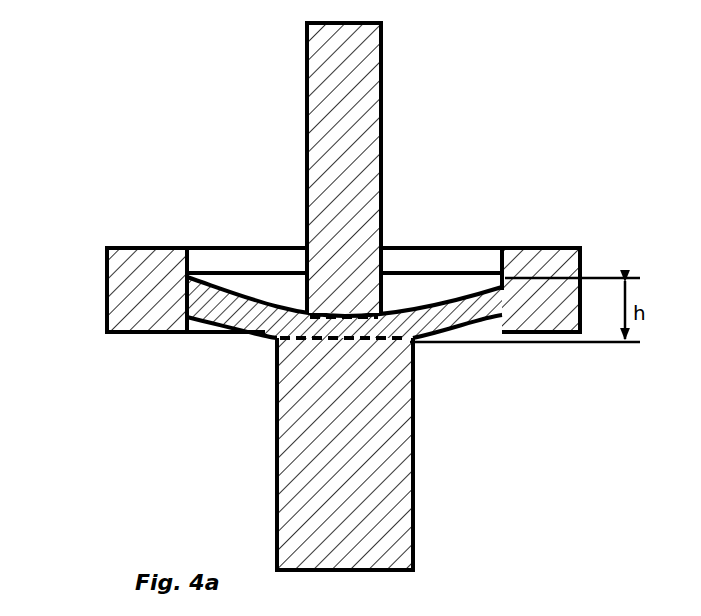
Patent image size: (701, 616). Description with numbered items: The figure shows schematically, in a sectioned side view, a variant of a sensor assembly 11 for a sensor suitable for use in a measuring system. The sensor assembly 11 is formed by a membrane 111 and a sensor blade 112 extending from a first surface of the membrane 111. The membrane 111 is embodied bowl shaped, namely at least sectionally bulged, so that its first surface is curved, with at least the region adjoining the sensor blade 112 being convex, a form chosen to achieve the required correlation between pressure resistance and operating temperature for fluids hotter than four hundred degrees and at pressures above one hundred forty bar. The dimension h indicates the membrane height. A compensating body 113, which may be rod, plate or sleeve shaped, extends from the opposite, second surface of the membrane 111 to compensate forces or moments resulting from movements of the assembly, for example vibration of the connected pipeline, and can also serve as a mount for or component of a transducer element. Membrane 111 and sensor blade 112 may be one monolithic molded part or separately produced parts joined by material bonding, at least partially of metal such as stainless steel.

The sensor assembly 11 is at (330, 296).
The membrane 111 is at (367, 264).
The sensor blade 112 is at (345, 454).
The compensating body 113 is at (358, 93).